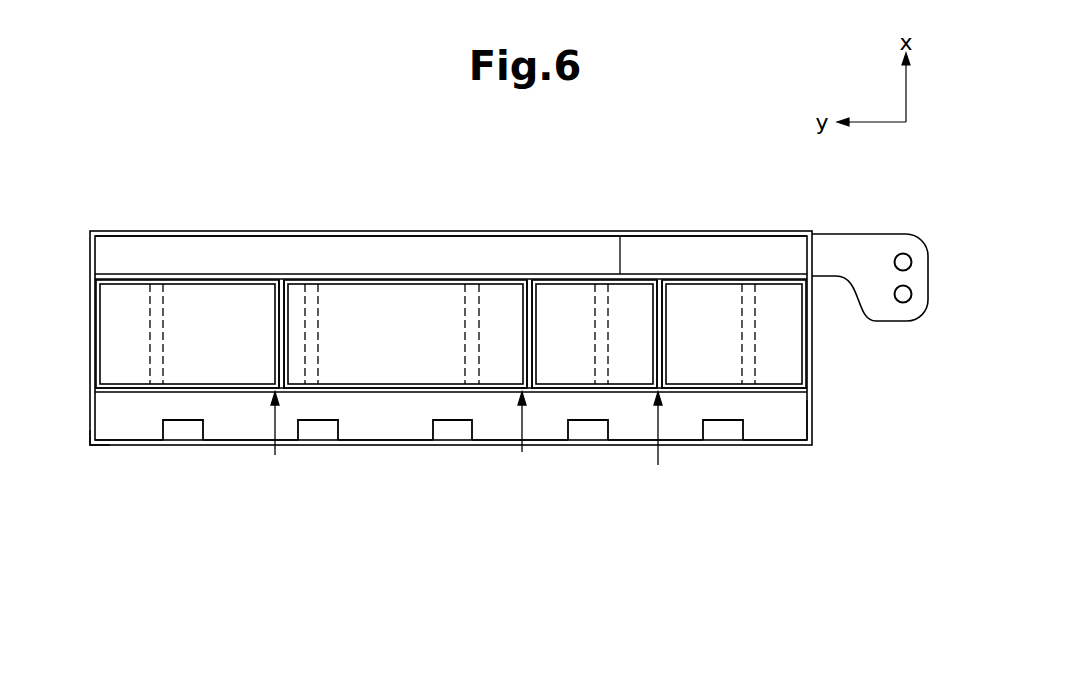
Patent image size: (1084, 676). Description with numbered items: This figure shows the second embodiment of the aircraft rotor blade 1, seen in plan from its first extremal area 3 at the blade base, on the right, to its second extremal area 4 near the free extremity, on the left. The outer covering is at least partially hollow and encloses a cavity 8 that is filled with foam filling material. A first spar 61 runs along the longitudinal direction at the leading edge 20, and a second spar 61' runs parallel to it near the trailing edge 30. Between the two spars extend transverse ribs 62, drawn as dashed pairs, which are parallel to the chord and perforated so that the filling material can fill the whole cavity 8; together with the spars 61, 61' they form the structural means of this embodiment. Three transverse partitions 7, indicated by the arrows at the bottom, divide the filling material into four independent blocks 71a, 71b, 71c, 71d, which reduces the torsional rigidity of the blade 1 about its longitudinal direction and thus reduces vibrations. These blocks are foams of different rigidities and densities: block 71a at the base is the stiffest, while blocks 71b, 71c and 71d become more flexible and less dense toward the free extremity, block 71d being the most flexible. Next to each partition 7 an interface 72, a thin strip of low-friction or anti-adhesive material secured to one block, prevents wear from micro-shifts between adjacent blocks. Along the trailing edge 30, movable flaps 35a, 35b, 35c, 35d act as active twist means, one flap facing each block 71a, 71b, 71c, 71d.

The blade 1 is at (301, 158).
The first extremal area 3 is at (812, 443).
The second extremal area 4 is at (90, 443).
The transverse partition 7 is at (275, 455).
The cavity 8 is at (806, 330).
The leading edge 20 is at (368, 232).
The trailing edge 30 is at (415, 443).
The movable flap 35a is at (726, 440).
The movable flap 35b is at (584, 440).
The movable flap 35c is at (320, 440).
The movable flap 35d is at (176, 437).
The first spar 61 is at (638, 216).
The second spar 61' is at (845, 429).
The transverse rib 62 is at (158, 295).
The block of filling material 71a is at (780, 372).
The block of filling material 71b is at (573, 373).
The block of filling material 71c is at (348, 372).
The block of filling material 71d is at (213, 362).
The interface 72 is at (280, 278).